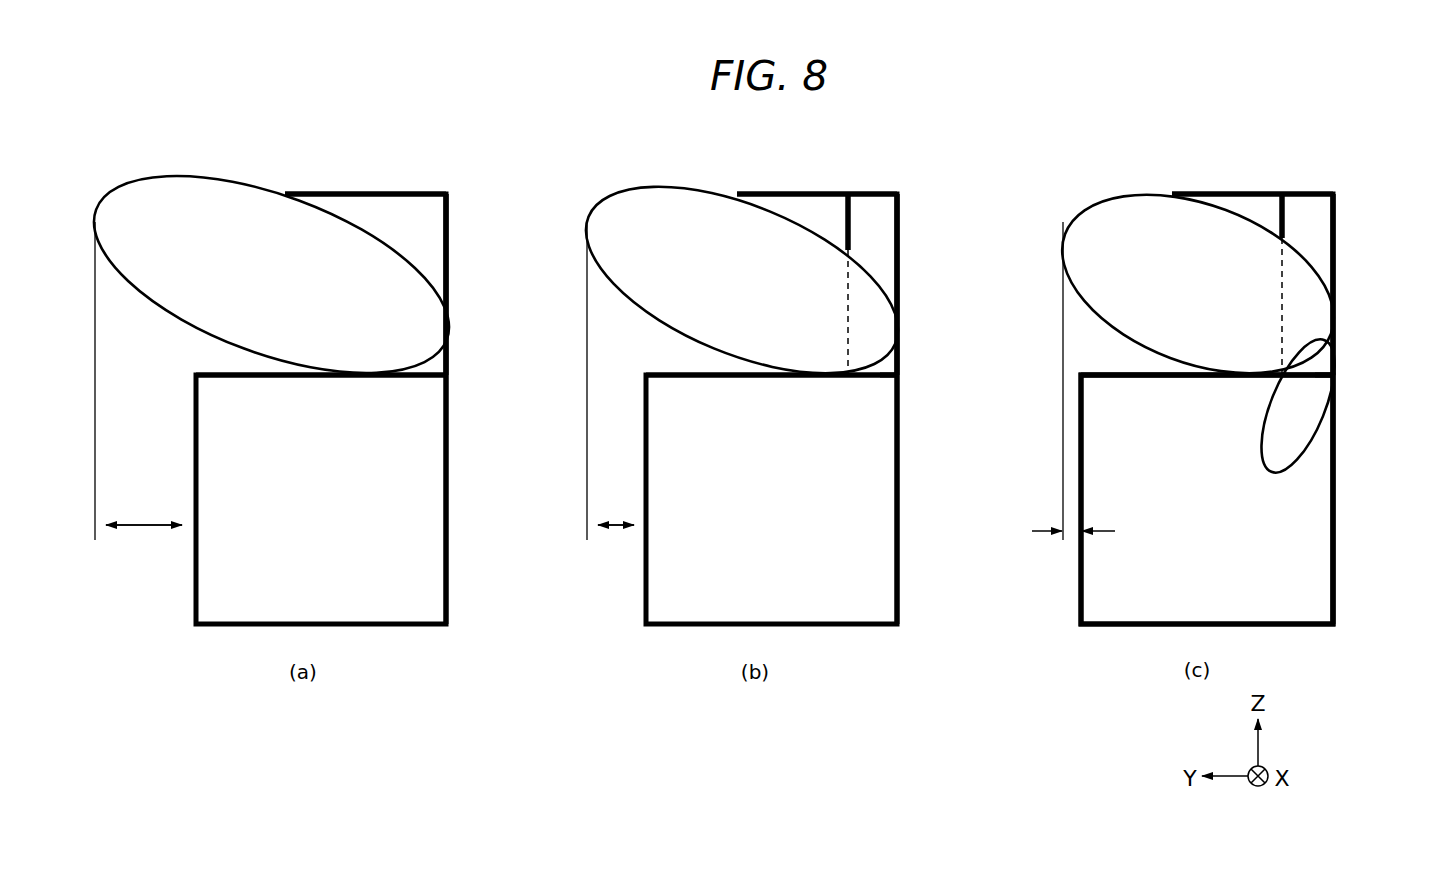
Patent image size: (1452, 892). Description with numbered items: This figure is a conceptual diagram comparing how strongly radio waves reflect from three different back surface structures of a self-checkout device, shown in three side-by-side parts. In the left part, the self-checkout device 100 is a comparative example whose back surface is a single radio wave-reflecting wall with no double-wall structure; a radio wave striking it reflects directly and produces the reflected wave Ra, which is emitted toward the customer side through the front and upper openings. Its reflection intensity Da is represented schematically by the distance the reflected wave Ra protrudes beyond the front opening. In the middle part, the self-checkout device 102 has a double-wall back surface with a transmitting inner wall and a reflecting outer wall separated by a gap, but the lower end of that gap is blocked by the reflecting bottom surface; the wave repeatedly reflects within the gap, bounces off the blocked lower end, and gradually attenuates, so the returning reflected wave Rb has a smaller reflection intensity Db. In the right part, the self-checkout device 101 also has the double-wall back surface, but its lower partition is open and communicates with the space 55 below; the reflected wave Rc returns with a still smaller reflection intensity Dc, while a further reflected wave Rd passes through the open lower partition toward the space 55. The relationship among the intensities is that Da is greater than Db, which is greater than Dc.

The self-checkout device 100 is at (412, 158).
The self-checkout device 102 is at (861, 160).
The self-checkout device 101 is at (1289, 157).
The space 55 is at (1272, 548).
The reflected wave Ra is at (182, 186).
The reflected wave Rb is at (665, 197).
The reflected wave Rc is at (1121, 205).
The reflected wave Rd is at (1297, 443).
The reflection intensity Da is at (144, 541).
The reflection intensity Db is at (616, 540).
The reflection intensity Dc is at (1052, 531).